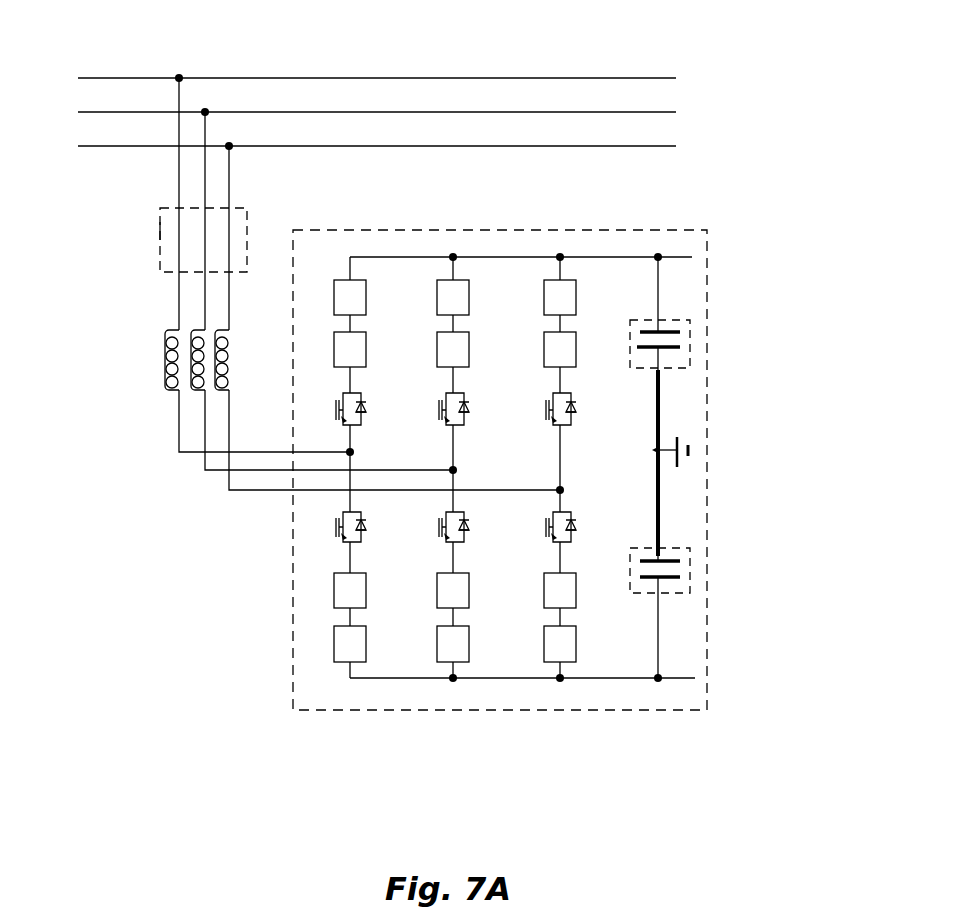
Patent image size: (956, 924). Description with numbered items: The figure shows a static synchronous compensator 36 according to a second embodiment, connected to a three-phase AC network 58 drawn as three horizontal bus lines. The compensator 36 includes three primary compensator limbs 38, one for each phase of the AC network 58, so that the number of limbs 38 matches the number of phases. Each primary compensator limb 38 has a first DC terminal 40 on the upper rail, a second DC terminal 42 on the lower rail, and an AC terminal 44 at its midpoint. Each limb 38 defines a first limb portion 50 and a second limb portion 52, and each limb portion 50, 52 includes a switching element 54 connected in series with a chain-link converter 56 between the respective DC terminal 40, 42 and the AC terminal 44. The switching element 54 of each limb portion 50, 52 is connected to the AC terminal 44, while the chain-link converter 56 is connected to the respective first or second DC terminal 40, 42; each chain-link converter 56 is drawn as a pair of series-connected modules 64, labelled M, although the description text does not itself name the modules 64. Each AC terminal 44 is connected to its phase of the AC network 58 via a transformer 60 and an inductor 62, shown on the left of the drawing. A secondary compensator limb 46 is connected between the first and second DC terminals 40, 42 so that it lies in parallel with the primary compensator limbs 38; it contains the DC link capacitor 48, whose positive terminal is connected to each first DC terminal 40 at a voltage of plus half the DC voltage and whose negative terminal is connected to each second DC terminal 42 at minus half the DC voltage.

The static synchronous compensator 36 is at (222, 537).
The primary compensator limb 38 is at (453, 230).
The first DC terminal 40 is at (350, 257).
The second DC terminal 42 is at (453, 680).
The AC terminal 44 is at (354, 452).
The secondary compensator limb 46 is at (658, 230).
The DC link capacitor 48 is at (695, 568).
The first limb portion 50 is at (315, 344).
The second limb portion 52 is at (327, 598).
The switching element 54 is at (367, 396).
The chain-link converter 56 is at (588, 321).
The three-phase AC network 58 is at (472, 146).
The transformer 60 is at (165, 232).
The inductor 62 is at (223, 392).
The series-connected modules 64 is at (367, 297).